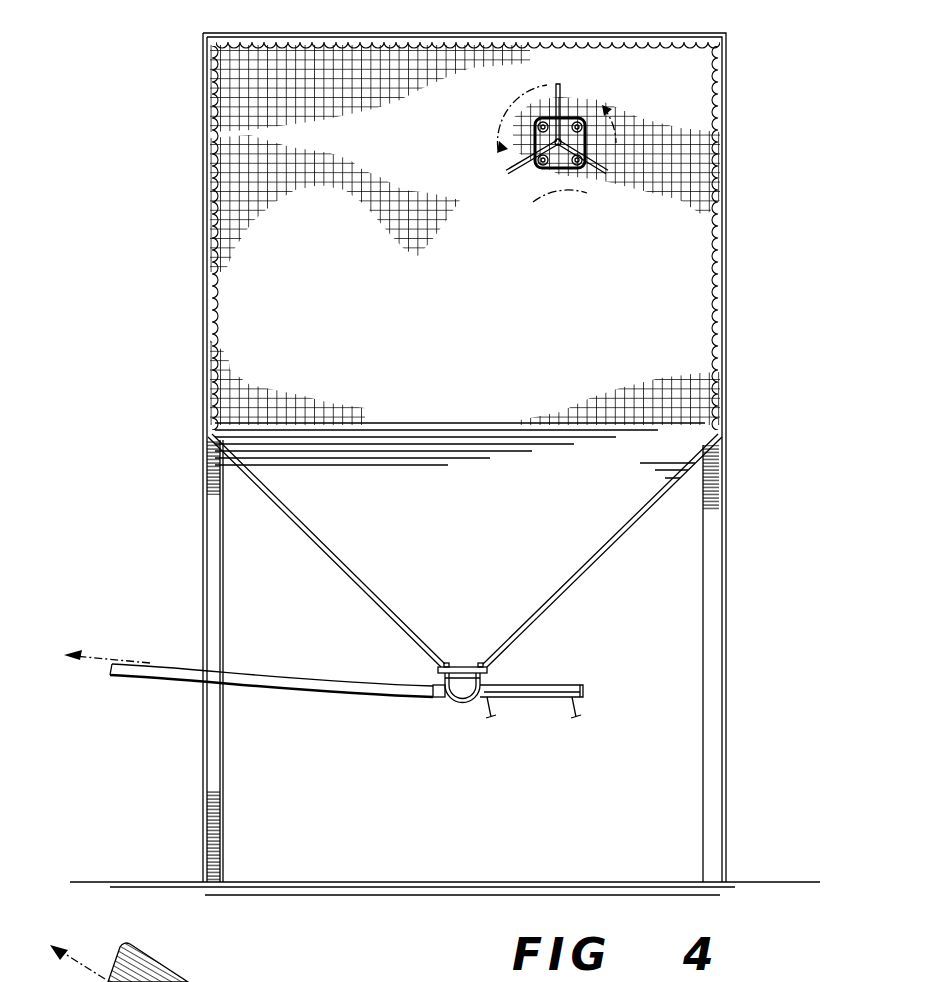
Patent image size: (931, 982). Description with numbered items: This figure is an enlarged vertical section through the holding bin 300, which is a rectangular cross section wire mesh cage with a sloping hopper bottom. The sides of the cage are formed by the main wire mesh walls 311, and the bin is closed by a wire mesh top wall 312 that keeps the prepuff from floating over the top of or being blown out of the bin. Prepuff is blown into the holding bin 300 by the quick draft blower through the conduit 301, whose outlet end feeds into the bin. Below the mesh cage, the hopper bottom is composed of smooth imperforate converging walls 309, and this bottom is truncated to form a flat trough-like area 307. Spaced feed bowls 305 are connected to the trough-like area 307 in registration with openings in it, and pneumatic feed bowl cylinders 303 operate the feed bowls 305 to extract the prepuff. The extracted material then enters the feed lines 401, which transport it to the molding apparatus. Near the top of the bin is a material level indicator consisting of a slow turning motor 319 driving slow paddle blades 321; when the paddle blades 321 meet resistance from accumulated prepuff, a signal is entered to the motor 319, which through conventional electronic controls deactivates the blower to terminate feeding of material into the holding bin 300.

The holding bin 300 is at (742, 139).
The conduit 301 is at (187, 981).
The pneumatic feed bowl cylinders 303 is at (519, 698).
The feed bowls 305 is at (462, 702).
The trough-like area 307 is at (456, 666).
The converging walls 309 is at (338, 566).
The wire mesh walls 311 is at (355, 93).
The wire mesh top wall 312 is at (511, 43).
The slow turning motor 319 is at (558, 176).
The slow paddle blades 321 is at (520, 170).
The feed lines 401 is at (162, 677).